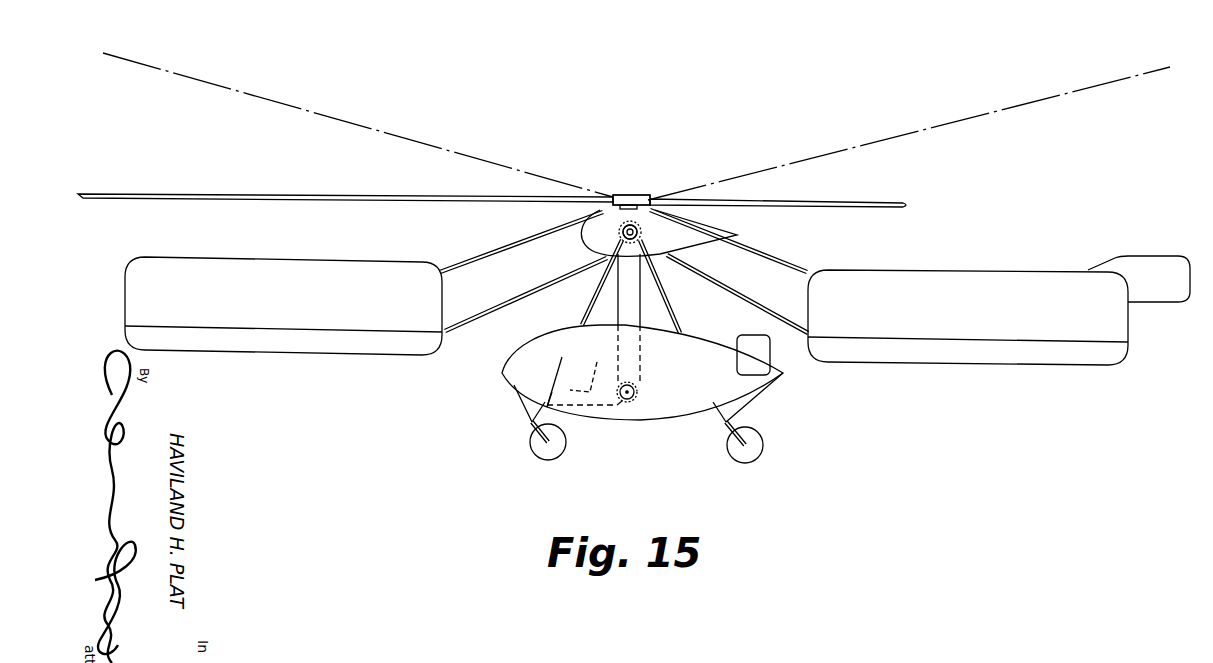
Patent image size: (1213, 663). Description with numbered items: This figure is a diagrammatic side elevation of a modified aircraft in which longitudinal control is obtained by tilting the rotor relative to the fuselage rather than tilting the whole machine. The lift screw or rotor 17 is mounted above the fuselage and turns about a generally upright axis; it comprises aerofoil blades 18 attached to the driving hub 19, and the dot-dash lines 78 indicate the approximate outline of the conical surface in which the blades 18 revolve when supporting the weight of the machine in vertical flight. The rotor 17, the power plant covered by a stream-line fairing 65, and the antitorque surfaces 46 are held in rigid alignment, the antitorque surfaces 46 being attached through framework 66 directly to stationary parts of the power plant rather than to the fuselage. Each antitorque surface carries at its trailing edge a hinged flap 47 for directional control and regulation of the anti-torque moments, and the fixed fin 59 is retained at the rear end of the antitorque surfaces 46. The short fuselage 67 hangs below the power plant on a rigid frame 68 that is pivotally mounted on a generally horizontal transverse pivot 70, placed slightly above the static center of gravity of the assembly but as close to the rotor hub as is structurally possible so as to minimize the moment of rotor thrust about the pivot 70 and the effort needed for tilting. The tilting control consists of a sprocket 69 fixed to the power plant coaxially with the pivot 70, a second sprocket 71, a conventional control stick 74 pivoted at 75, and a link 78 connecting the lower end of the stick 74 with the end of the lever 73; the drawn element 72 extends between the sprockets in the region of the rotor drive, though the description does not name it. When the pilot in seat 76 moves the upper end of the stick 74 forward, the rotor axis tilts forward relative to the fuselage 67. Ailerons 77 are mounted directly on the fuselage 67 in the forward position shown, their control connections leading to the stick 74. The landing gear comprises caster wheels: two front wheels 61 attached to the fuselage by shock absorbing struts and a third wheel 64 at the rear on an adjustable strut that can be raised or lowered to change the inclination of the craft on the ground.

The lift screw or rotor 17 is at (594, 173).
The aerofoil blades 18 is at (255, 193).
The driving hub 19 is at (640, 195).
The antitorque surfaces 46 is at (626, 311).
The hinged flap 47 is at (277, 350).
The fixed fin 59 is at (1176, 264).
The front wheels 61 is at (565, 451).
The third wheel 64 is at (727, 448).
The stream-line fairing 65 is at (720, 235).
The framework 66 is at (500, 253).
The short fuselage 67 is at (642, 372).
The rigid frame 68 is at (672, 322).
The sprocket 69 is at (621, 234).
The transverse pivot 70 is at (641, 232).
The second sprocket 71 is at (638, 392).
The drive shaft 72 is at (646, 311).
The lever 73 is at (622, 402).
The control stick 74 is at (557, 365).
The control stick pivot 75 is at (549, 391).
The seat 76 is at (597, 364).
The ailerons 77 is at (750, 335).
The link / dot-dash lines 78 is at (280, 106).